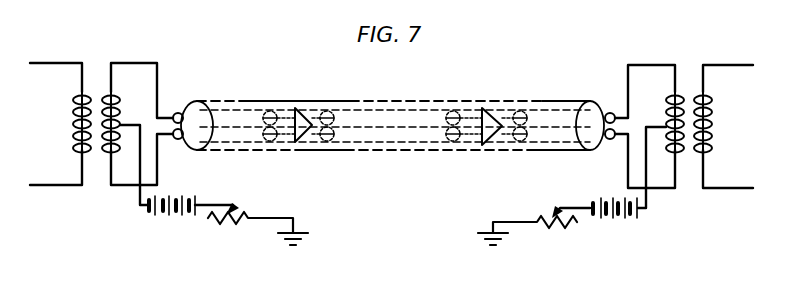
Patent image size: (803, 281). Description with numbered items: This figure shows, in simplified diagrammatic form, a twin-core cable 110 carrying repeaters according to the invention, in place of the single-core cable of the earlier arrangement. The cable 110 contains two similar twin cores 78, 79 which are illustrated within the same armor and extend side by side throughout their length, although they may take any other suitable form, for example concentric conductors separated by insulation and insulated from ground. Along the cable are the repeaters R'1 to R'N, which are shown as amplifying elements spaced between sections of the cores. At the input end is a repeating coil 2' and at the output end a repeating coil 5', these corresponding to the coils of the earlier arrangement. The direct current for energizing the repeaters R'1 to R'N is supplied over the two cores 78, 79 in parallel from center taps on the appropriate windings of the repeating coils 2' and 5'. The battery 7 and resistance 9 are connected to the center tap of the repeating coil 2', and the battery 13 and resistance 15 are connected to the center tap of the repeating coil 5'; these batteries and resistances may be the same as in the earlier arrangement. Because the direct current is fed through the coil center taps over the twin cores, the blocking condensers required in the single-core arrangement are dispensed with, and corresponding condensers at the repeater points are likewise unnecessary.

The repeating coil 2' is at (101, 119).
The repeating coil 5' is at (684, 124).
The twin core 78 is at (193, 113).
The twin core 79 is at (193, 138).
The twin-core cable 110 is at (253, 99).
The repeater R'1 is at (302, 105).
The repeater R'N is at (490, 110).
The battery 7 is at (165, 224).
The resistance 9 is at (229, 228).
The battery 13 is at (616, 230).
The resistance 15 is at (542, 230).